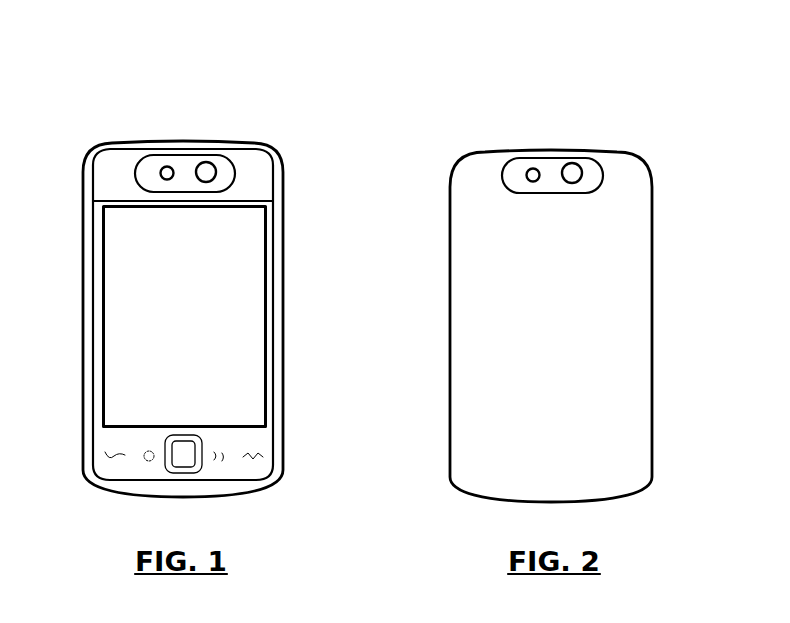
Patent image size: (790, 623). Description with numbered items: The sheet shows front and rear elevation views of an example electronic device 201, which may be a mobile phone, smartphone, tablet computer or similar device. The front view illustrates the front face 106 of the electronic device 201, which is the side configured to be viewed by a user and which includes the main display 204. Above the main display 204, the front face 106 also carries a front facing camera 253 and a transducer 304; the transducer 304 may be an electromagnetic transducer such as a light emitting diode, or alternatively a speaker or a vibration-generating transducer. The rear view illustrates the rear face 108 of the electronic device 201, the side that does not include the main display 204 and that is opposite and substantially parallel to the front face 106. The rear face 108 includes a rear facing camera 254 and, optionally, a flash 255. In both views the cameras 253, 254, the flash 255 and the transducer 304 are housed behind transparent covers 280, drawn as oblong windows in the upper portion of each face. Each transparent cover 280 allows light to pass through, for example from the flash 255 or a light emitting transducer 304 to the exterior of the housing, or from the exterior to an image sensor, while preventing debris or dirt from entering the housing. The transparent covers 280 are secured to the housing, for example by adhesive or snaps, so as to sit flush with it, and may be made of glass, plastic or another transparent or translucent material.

In FIG. 1, the electronic device 201 is at (183, 282).
In FIG. 2, the electronic device 201 is at (543, 264).
In FIG. 1, the front face 106 is at (259, 158).
In FIG. 2, the rear face 108 is at (625, 175).
In FIG. 1, the main display 204 is at (100, 274).
In FIG. 1, the front facing camera 253 is at (205, 162).
In FIG. 1, the transducer 304 is at (167, 166).
In FIG. 2, the rear facing camera 254 is at (533, 168).
In FIG. 2, the flash 255 is at (570, 163).
In FIG. 1, the transparent cover 280 is at (402, 139).
In FIG. 2, the transparent cover 280 is at (502, 175).